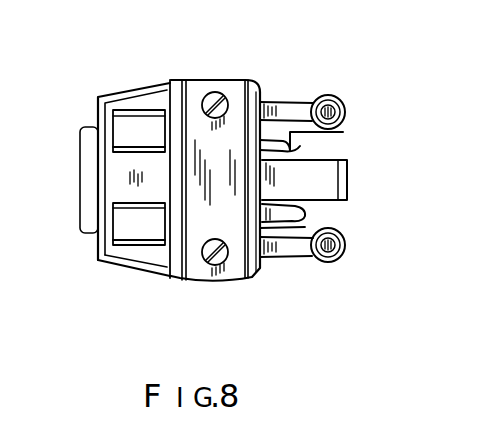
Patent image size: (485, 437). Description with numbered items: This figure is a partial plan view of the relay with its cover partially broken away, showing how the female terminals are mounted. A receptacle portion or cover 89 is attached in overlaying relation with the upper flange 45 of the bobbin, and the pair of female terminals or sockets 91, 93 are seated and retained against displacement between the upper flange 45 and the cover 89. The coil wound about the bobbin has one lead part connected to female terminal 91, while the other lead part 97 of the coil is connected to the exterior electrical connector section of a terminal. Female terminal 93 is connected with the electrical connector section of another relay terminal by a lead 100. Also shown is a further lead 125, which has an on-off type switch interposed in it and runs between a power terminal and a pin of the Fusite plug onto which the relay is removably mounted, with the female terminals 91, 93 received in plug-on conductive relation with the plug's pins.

The flange portion 45 is at (120, 168).
The cover 89 is at (205, 85).
The female terminal 91 is at (123, 120).
The female terminal 93 is at (125, 238).
The lead part 97 is at (303, 151).
The lead 100 is at (307, 213).
The lead 125 is at (0, 233).